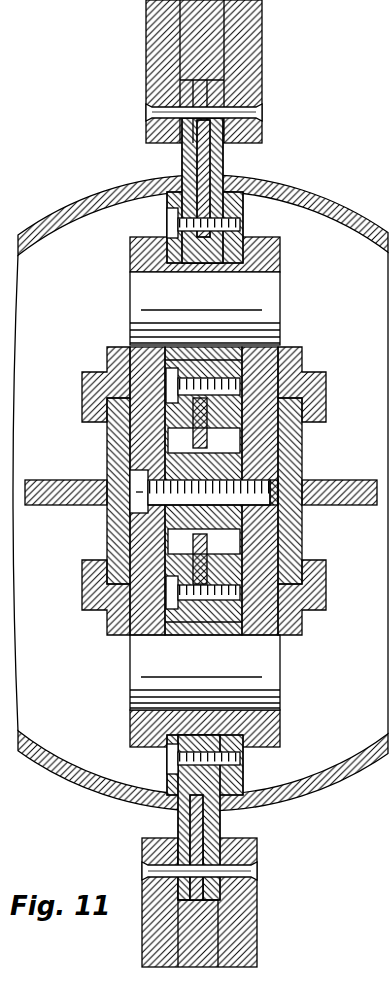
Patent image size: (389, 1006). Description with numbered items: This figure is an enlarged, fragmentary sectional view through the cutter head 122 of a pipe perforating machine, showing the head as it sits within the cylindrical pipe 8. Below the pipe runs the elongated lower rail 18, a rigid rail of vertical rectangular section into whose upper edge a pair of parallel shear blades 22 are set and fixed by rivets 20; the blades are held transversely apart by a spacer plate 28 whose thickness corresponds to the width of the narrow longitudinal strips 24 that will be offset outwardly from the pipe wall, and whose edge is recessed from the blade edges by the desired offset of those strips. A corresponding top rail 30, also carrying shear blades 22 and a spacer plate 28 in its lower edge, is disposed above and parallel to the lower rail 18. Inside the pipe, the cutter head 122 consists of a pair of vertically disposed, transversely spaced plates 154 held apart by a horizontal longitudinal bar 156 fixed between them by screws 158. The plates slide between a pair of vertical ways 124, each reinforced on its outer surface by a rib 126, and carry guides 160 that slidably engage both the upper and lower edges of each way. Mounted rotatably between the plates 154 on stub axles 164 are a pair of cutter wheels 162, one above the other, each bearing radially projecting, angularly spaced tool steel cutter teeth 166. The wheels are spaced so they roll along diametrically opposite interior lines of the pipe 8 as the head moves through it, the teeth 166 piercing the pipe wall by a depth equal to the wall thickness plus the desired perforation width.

The cylindrical pipe 8 is at (357, 220).
The lower rail 18 is at (250, 935).
The rivets 20 is at (256, 113).
The shear blades 22 is at (182, 151).
The longitudinal strips 24 is at (197, 168).
The spacer plate 28 is at (220, 93).
The top rail 30 is at (262, 25).
The cutter head 122 is at (301, 347).
The ways 124 is at (112, 446).
The rib 126 is at (52, 506).
The plates 154 is at (296, 256).
The horizontal longitudinal bar 156 is at (228, 515).
The screws 158 is at (270, 481).
The guides 160 is at (97, 403).
The cutter wheels 162 is at (245, 211).
The stub axles 164 is at (272, 300).
The cutter teeth 166 is at (225, 183).